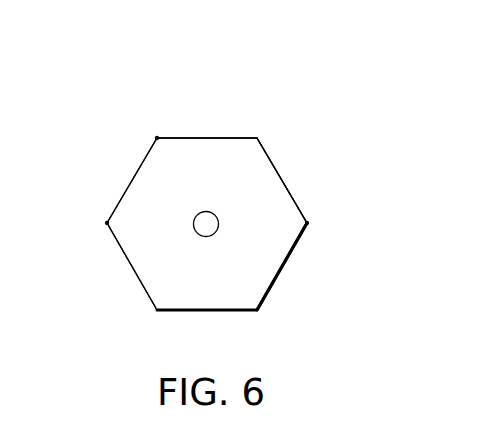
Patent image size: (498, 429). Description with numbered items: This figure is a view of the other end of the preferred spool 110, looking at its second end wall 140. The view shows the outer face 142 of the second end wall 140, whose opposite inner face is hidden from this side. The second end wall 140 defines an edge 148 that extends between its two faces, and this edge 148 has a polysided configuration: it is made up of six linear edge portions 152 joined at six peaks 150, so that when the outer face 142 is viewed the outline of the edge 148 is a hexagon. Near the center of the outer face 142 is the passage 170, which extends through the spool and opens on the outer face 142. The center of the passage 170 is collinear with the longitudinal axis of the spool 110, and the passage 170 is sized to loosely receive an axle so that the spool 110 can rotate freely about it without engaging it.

The spool 110 is at (171, 82).
The second end wall 140 is at (230, 167).
The outer face 142 is at (263, 203).
The edge 148 is at (140, 295).
The peaks 150 is at (157, 138).
The linear edge portions 152 is at (220, 138).
The passage 170 is at (210, 227).